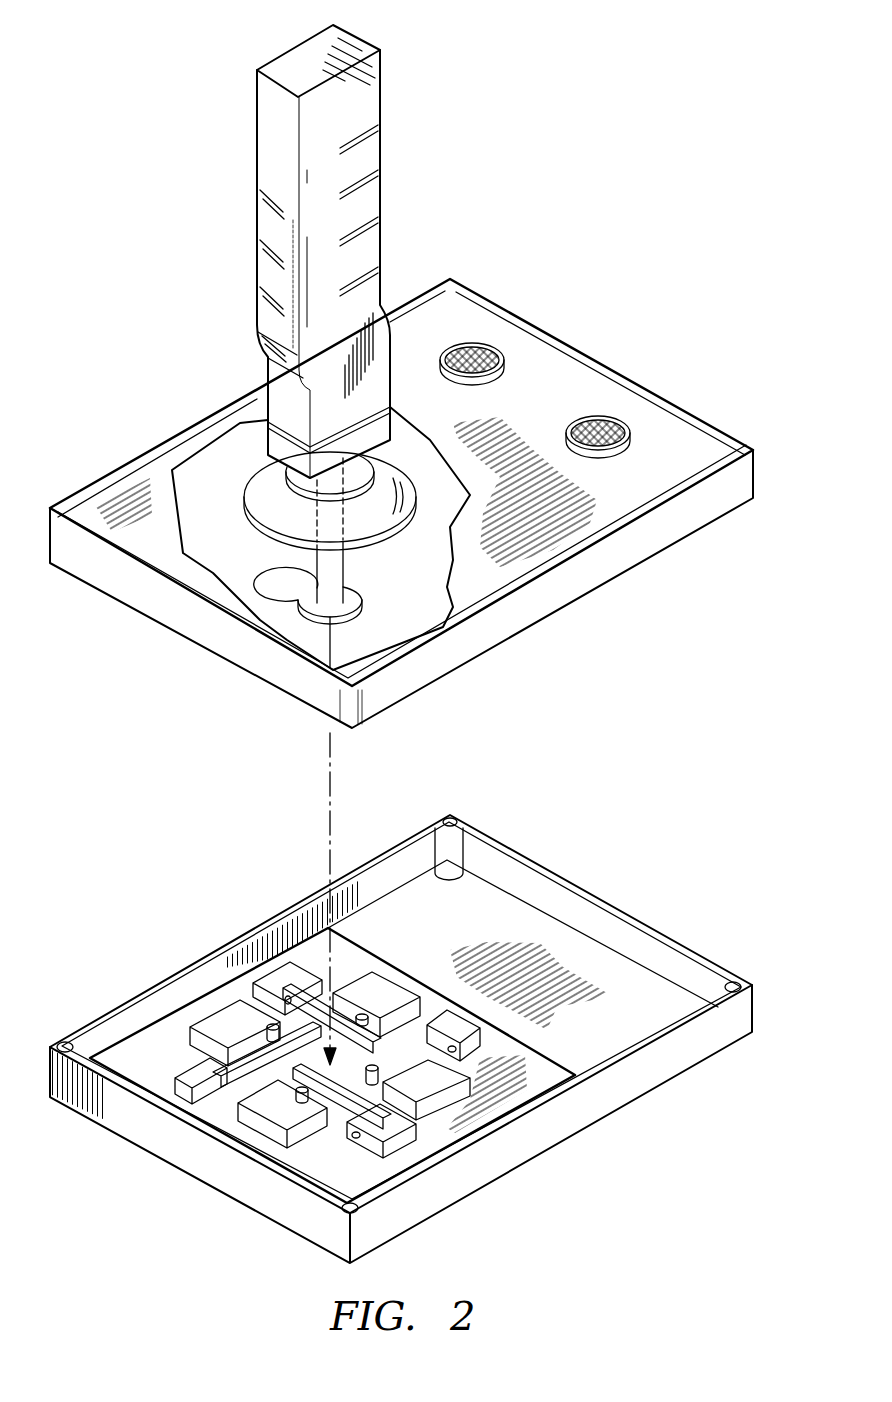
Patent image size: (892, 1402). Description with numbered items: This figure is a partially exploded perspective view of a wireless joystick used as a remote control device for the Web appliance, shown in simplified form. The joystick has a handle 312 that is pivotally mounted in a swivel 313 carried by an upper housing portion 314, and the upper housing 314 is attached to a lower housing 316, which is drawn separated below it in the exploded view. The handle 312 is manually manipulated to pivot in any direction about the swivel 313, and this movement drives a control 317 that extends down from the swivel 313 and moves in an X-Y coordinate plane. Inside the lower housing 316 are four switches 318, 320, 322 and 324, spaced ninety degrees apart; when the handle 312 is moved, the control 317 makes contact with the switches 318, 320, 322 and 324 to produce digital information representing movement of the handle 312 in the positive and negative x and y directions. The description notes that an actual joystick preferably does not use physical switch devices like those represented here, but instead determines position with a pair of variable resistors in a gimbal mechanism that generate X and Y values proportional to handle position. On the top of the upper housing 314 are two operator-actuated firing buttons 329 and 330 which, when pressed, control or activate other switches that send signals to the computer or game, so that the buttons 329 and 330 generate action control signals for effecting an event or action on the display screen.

The handle 312 is at (312, 57).
The swivel 313 is at (337, 478).
The upper housing portion 314 is at (695, 517).
The lower housing 316 is at (695, 1055).
The control 317 is at (308, 596).
The switch 318 is at (283, 1105).
The switch 320 is at (423, 1075).
The switch 322 is at (340, 1030).
The switch 324 is at (228, 1023).
The firing button 329 is at (468, 357).
The firing button 330 is at (590, 425).